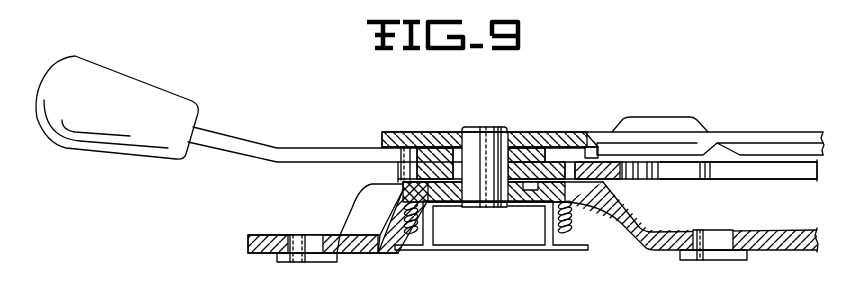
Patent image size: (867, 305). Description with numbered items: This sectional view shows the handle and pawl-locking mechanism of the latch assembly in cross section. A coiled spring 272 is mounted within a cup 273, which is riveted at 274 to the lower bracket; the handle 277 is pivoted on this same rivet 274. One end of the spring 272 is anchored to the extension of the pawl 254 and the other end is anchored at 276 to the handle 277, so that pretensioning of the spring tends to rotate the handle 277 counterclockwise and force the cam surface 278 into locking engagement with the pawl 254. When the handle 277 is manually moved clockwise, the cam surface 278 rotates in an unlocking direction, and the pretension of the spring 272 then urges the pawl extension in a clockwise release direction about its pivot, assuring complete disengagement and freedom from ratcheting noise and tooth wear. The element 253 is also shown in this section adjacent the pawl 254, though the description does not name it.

The rod 253 is at (758, 172).
The pawl 254 is at (648, 172).
The coiled spring 272 is at (568, 228).
The cup 273 is at (418, 252).
The rivet 274 is at (481, 152).
The anchor point of spring to handle 276 is at (397, 125).
The handle 277 is at (336, 138).
The cam surface 278 is at (582, 158).